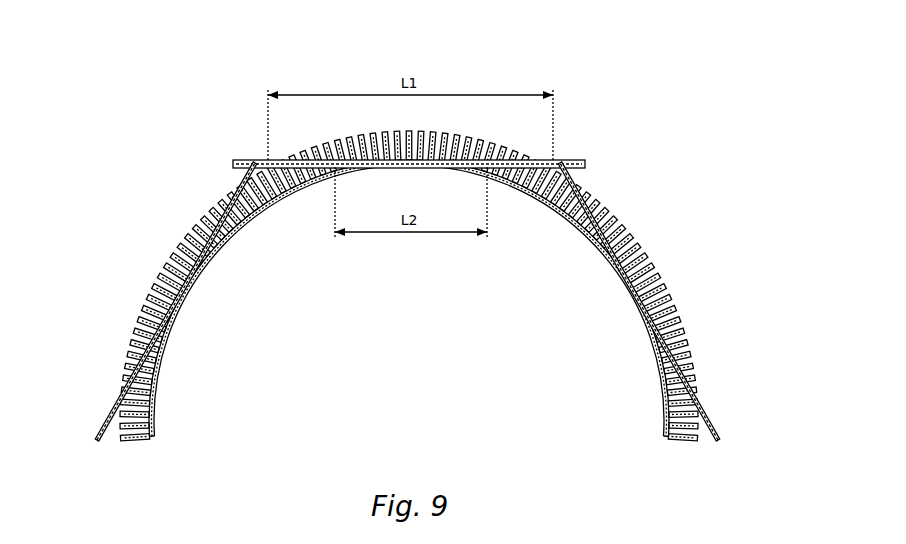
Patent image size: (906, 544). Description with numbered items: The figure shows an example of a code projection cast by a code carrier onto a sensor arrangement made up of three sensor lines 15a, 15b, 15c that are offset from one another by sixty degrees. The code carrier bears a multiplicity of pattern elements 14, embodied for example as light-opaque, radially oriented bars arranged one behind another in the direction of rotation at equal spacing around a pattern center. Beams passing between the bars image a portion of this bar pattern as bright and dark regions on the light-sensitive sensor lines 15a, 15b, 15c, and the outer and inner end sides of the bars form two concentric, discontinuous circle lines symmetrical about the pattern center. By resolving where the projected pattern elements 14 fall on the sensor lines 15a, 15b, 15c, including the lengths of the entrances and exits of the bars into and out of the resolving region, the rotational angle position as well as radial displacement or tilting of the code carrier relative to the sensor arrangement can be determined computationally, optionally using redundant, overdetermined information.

The pattern elements 14 is at (615, 217).
The sensor line 15a is at (105, 440).
The sensor line 15b is at (563, 163).
The sensor line 15c is at (643, 327).